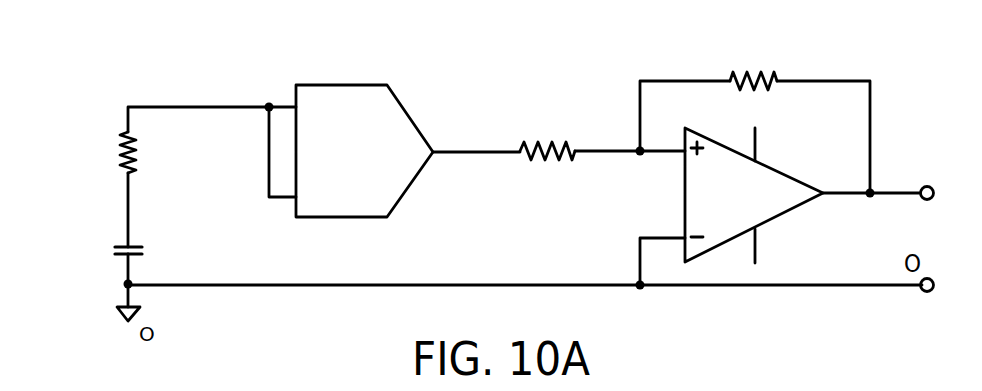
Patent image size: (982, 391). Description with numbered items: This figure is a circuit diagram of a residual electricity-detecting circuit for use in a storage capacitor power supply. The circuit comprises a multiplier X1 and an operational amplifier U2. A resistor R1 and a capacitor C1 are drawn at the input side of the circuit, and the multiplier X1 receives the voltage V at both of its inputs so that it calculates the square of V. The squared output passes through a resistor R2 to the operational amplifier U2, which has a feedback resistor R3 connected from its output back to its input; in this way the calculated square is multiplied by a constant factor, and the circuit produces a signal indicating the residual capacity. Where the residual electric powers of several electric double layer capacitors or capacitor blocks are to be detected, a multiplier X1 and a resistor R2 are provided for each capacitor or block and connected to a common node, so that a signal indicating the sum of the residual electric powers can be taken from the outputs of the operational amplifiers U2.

The resistor R1 (100 m) R1 is at (115, 149).
The capacitor C1 (300) C1 is at (118, 246).
The multiplier X1 is at (364, 136).
The resistor R2 is at (538, 157).
The feedback resistor R3 (3K) R3 is at (753, 70).
The operational amplifier U2 is at (754, 195).